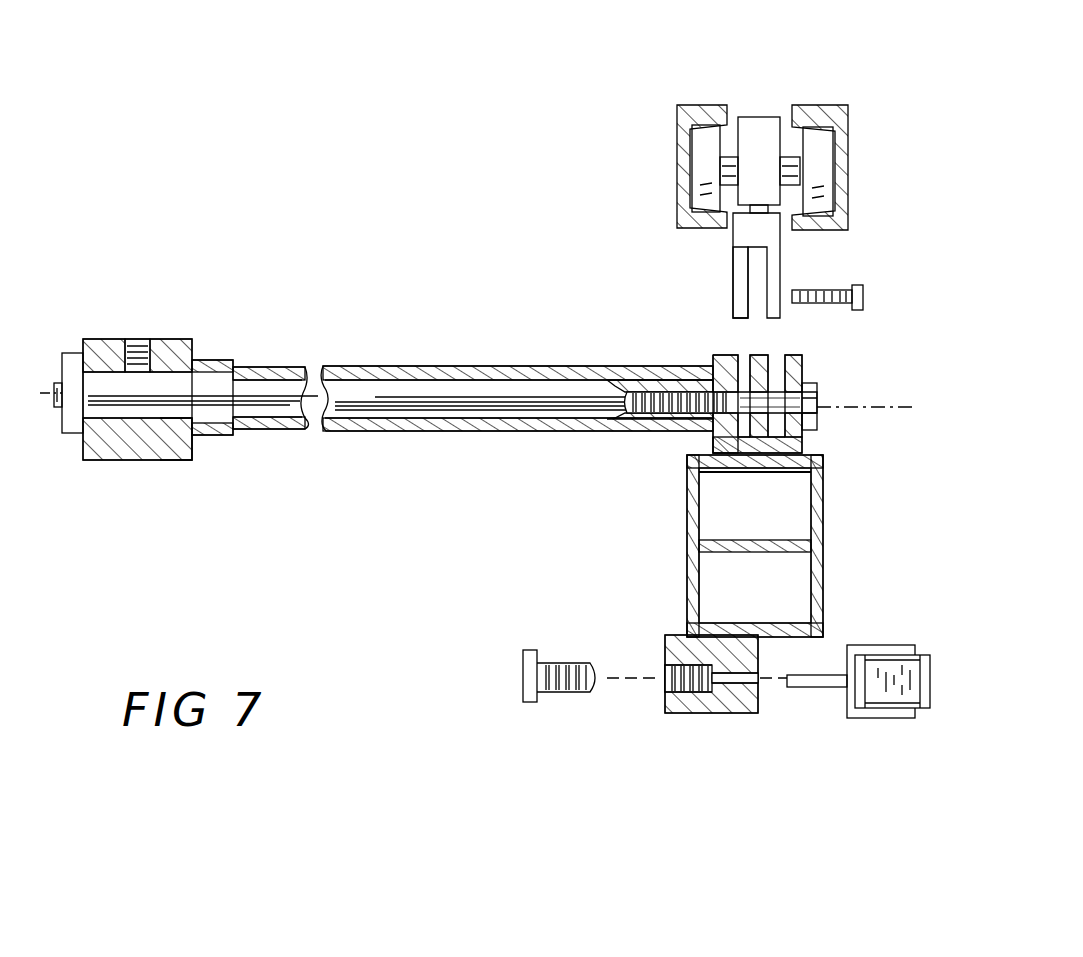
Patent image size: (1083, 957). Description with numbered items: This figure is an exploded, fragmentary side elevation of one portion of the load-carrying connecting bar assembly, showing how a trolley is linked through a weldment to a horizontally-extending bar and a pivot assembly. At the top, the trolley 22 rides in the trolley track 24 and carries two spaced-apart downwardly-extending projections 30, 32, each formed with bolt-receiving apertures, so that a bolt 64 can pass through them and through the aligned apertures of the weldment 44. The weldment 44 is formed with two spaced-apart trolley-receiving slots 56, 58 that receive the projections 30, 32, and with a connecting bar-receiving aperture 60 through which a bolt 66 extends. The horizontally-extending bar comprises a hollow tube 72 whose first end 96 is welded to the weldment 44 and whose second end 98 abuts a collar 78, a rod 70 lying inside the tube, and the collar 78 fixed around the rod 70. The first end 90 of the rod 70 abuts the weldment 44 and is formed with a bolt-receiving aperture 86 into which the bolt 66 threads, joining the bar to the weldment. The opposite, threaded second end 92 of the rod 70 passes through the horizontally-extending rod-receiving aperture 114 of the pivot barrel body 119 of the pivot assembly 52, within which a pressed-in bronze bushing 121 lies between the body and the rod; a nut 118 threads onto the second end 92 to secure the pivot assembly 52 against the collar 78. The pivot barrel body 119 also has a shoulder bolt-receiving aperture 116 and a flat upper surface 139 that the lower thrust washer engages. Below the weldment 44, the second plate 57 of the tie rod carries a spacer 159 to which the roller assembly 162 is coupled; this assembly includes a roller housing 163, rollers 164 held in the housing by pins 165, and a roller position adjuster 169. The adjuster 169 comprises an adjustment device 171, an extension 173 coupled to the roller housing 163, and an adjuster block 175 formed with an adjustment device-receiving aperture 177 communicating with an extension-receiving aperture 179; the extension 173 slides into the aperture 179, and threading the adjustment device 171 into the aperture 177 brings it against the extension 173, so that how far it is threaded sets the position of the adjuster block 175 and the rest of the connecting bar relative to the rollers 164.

The trolley 22 is at (783, 88).
The trolley track 24 is at (845, 140).
The downwardly-extending projection 30 is at (775, 285).
The downwardly-extending projection 32 is at (738, 290).
The bolt 64 is at (856, 290).
The weldment 44 is at (813, 372).
The trolley-receiving slot 56 is at (770, 362).
The trolley-receiving slot 58 is at (730, 355).
The first end of hollow tube 96 is at (714, 372).
The bolt 66 is at (819, 389).
The connecting bar-receiving aperture 60 is at (817, 422).
The second plate 57 is at (823, 450).
The bolt-receiving aperture 86 is at (648, 420).
The first end of rod 90 is at (690, 437).
The rod 70 is at (376, 402).
The hollow tube 72 is at (483, 430).
The collar 78 is at (218, 360).
The second end of rod 92 is at (55, 378).
The flat upper surface 139 is at (102, 339).
The shoulder bolt-receiving aperture 116 is at (138, 338).
The horizontally-extending rod-receiving aperture 114 is at (160, 417).
The nut 118 is at (72, 437).
The bushing 121 is at (132, 423).
The pivot barrel body 119 is at (175, 450).
The second end of hollow tube 98 is at (240, 435).
The pivot assembly 52 is at (98, 502).
The spacer 159 is at (826, 540).
The roller housing 163 is at (865, 644).
The pin 165 is at (895, 648).
The roller 164 is at (882, 692).
The roller assembly 162 is at (902, 744).
The extension 173 is at (832, 688).
The extension-receiving aperture 179 is at (742, 688).
The adjuster block 175 is at (695, 715).
The adjustment device-receiving aperture 177 is at (668, 676).
The adjustment device 171 is at (522, 668).
The roller position adjuster 169 is at (605, 732).